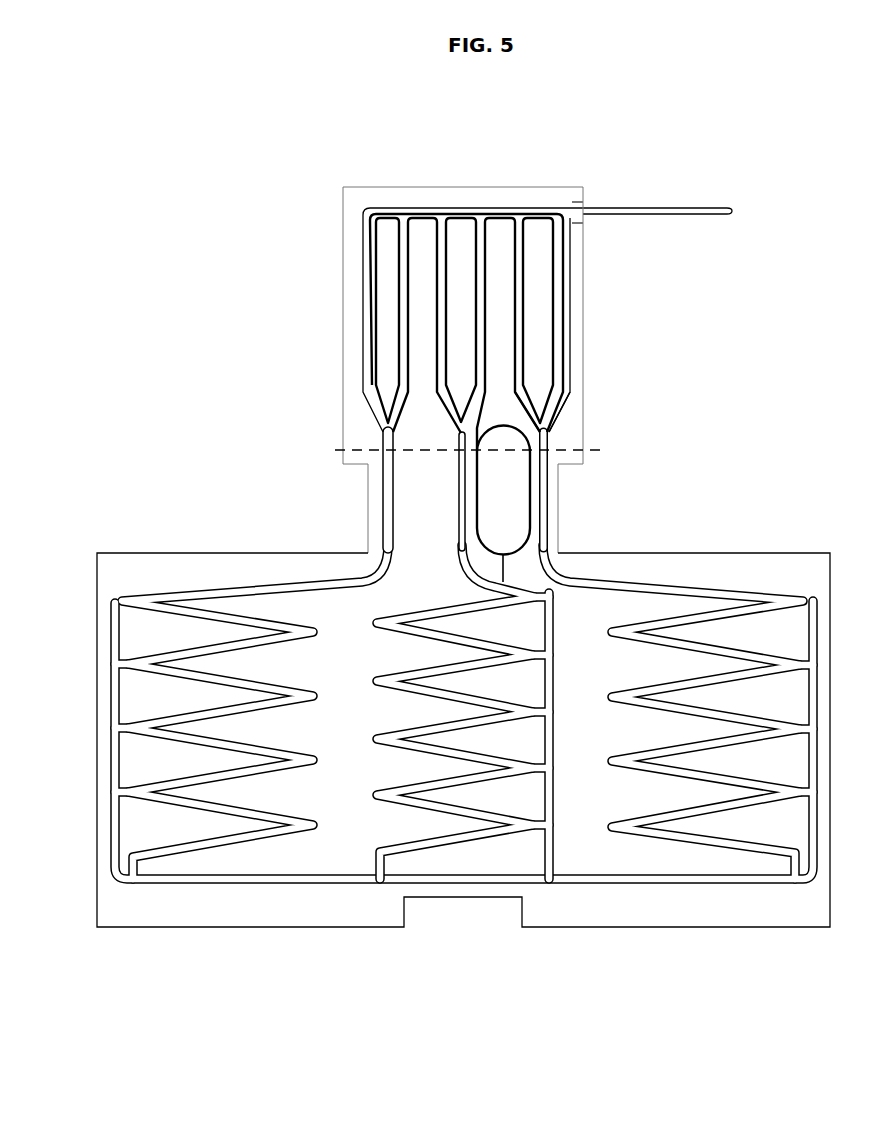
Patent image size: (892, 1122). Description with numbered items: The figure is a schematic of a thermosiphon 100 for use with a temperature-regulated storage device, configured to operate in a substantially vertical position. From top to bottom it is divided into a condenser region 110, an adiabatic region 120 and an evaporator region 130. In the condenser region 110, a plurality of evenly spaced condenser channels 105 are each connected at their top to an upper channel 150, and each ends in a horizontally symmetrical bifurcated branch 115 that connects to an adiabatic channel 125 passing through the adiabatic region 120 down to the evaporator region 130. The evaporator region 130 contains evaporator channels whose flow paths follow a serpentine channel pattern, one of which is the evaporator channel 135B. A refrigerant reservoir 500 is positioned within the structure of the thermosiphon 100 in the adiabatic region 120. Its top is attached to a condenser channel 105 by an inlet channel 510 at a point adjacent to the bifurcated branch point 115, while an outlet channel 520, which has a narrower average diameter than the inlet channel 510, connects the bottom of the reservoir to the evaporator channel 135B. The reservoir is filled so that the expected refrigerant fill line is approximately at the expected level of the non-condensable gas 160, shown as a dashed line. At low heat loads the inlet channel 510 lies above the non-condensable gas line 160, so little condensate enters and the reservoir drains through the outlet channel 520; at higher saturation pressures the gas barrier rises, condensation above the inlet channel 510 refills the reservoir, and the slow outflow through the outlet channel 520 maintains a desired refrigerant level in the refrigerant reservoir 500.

The thermosiphon 100 is at (185, 245).
The upper channel 150 is at (500, 195).
The condenser region 110 is at (324, 178).
The condenser channel 105 is at (568, 337).
The bifurcated branch 115 is at (561, 437).
The non-condensable gas line 160 is at (609, 450).
The adiabatic region 120 is at (338, 470).
The inlet channel 510 is at (468, 433).
The refrigerant reservoir 500 is at (503, 490).
The adiabatic channel 125 is at (551, 505).
The outlet channel 520 is at (512, 562).
The evaporator channel 135B is at (437, 606).
The evaporator region 130 is at (100, 540).